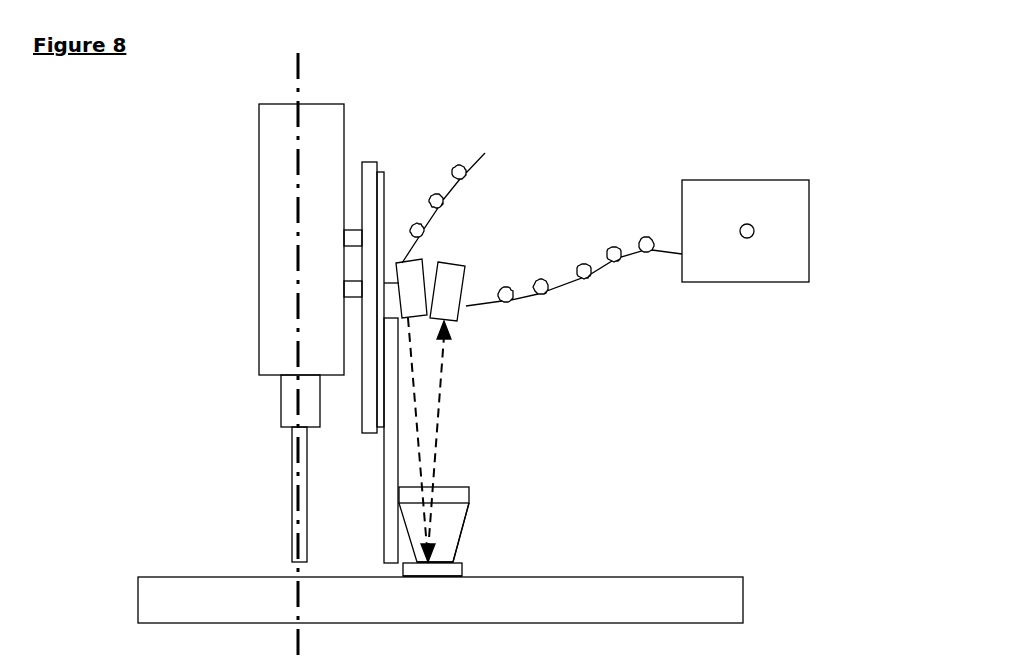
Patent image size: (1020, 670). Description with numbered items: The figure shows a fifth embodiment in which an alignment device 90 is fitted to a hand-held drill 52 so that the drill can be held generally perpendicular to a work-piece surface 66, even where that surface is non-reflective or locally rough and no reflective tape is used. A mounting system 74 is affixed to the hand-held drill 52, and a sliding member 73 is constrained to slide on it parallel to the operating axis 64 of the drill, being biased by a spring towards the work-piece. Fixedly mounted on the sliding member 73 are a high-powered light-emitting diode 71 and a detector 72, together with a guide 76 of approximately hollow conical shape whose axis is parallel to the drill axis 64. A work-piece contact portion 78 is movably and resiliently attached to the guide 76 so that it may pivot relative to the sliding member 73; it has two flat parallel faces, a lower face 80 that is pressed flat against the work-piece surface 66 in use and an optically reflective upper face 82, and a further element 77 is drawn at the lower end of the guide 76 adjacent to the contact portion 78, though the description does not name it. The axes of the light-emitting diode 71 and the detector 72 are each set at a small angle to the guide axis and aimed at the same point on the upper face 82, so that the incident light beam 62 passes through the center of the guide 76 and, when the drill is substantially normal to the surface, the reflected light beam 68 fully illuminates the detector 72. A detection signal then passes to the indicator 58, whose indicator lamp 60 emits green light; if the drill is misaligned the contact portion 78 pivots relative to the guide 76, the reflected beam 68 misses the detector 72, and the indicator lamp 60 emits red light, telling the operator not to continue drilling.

The hand-held drill 52 is at (258, 263).
The indicator 58 is at (742, 180).
The indicator lamp 60 is at (754, 231).
The incident light beam 62 is at (417, 433).
The operating axis 64 is at (297, 75).
The work-piece surface 66 is at (183, 577).
The reflected light beam 68 is at (443, 395).
The light-emitting diode 71 is at (420, 258).
The detector 72 is at (465, 263).
The sliding member 73 is at (381, 474).
The mounting system 74 is at (372, 162).
The guide 76 is at (470, 495).
The container wall 77 is at (455, 561).
The work-piece contact portion 78 is at (462, 570).
The lower parallel face 80 is at (432, 578).
The upper parallel face 82 is at (432, 562).
The alignment device 90 is at (468, 122).